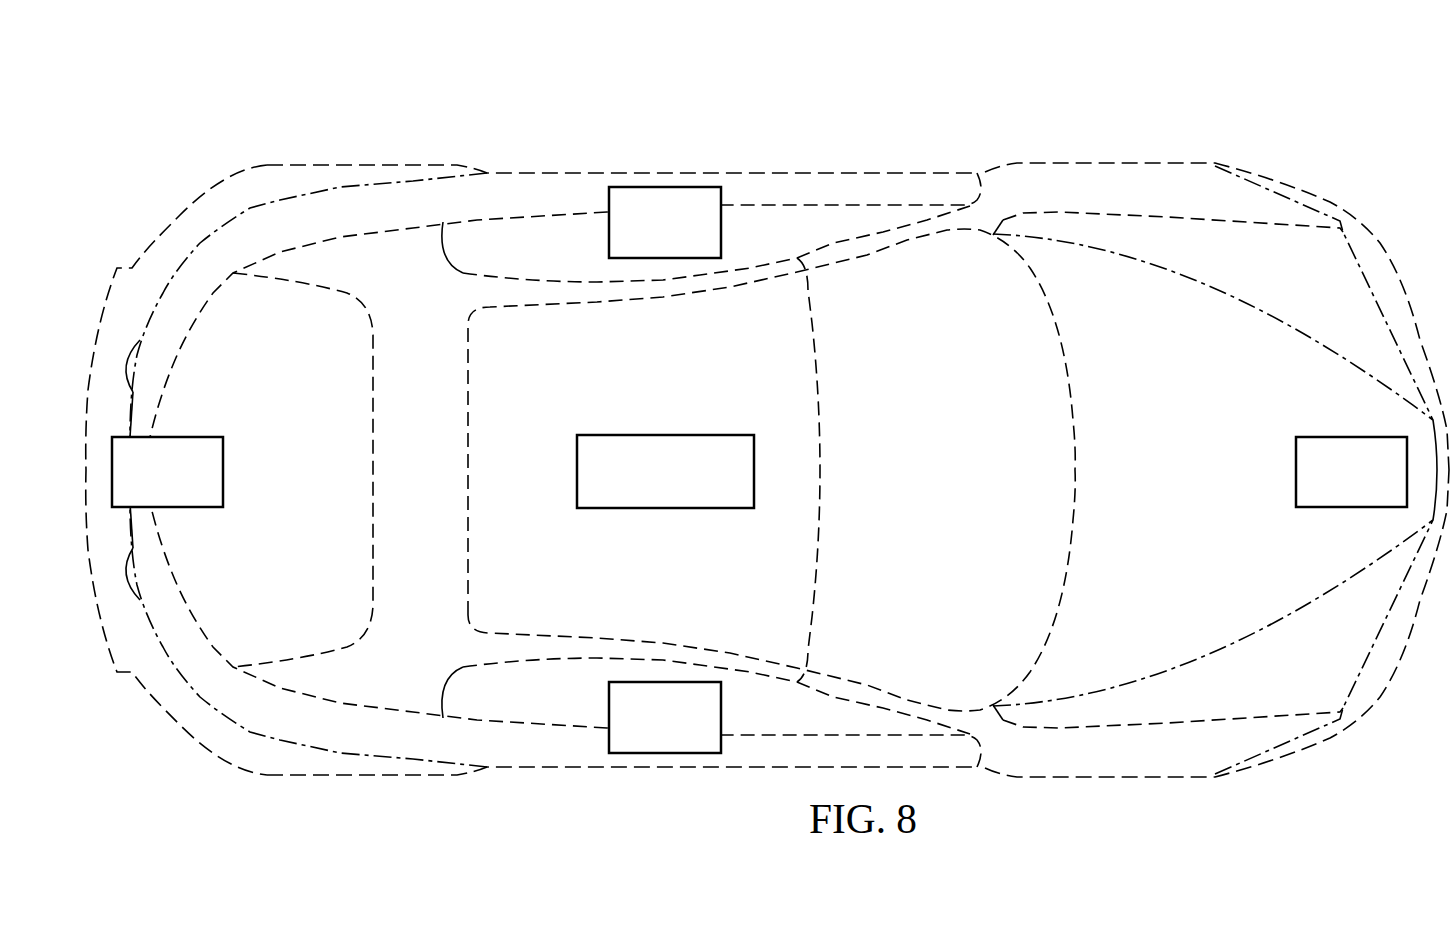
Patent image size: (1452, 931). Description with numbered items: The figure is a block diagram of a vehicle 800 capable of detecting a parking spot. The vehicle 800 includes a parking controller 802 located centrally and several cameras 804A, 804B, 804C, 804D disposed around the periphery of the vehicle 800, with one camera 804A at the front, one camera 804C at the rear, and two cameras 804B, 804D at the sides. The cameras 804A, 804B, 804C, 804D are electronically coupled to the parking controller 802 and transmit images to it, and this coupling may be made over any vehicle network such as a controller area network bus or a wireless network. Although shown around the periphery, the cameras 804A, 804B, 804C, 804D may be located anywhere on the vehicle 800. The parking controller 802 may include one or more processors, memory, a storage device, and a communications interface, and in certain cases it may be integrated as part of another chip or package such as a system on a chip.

The vehicle 800 is at (351, 105).
The parking controller 802 is at (665, 435).
The camera 804A is at (1295, 469).
The camera 804B is at (665, 755).
The camera 804C is at (224, 469).
The camera 804D is at (665, 187).